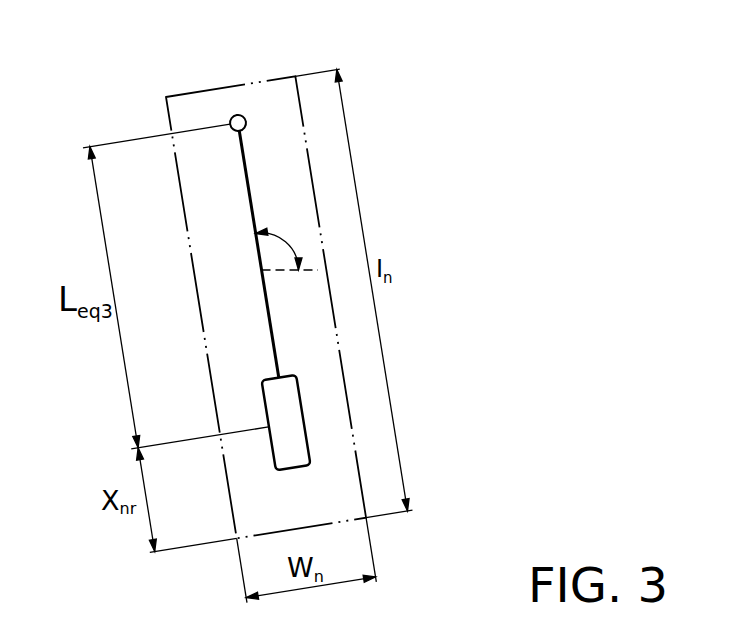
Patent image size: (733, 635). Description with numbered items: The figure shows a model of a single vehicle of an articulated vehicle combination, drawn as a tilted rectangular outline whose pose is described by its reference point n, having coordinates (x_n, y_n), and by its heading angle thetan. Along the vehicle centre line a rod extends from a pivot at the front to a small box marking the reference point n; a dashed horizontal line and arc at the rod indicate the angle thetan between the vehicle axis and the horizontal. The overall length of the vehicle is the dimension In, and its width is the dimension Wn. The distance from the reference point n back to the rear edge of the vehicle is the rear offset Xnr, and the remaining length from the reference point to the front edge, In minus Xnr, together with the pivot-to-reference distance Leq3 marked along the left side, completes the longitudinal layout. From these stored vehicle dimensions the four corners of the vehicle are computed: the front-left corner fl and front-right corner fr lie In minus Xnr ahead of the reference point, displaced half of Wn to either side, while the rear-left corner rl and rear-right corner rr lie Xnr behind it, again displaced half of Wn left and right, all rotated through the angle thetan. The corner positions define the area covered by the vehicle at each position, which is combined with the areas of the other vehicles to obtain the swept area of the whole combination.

The equivalent length Leq3 is at (113, 297).
The rear axle offset Xnr is at (147, 499).
The vehicle width Wn is at (311, 587).
The vehicle length In is at (372, 290).
The vehicle heading angle thetan is at (287, 243).
The front-left corner fl is at (166, 97).
The front-right corner fr is at (302, 120).
The rear-left corner rl is at (237, 538).
The rear-right corner rr is at (367, 518).
The vehicle reference point n is at (288, 425).